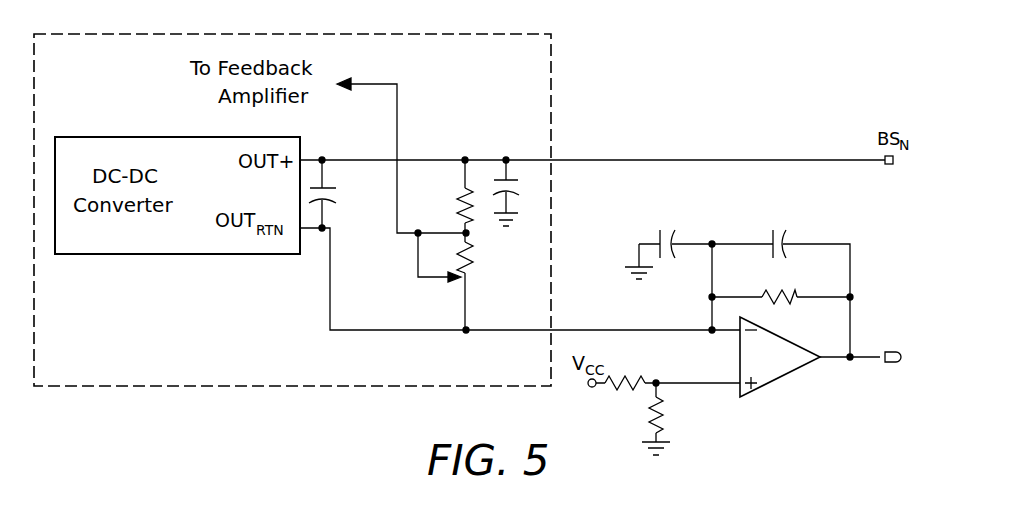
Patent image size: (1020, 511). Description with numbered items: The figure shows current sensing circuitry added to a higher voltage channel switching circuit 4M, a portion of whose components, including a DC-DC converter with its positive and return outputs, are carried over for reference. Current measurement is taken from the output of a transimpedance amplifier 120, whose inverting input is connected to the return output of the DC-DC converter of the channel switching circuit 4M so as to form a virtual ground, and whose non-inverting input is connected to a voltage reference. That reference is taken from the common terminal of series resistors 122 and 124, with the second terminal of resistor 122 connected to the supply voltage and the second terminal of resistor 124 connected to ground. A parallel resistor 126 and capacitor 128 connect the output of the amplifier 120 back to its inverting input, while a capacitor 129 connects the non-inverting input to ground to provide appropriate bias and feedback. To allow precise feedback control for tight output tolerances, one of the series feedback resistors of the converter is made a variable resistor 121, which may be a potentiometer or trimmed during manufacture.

The channel switching circuit 4M is at (551, 70).
The transimpedance amplifier 120 is at (781, 378).
The variable resistor 121 is at (416, 277).
The resistor 122 is at (634, 395).
The resistor 124 is at (660, 418).
The resistor 126 is at (790, 299).
The capacitor 128 is at (780, 234).
The capacitor 129 is at (667, 230).